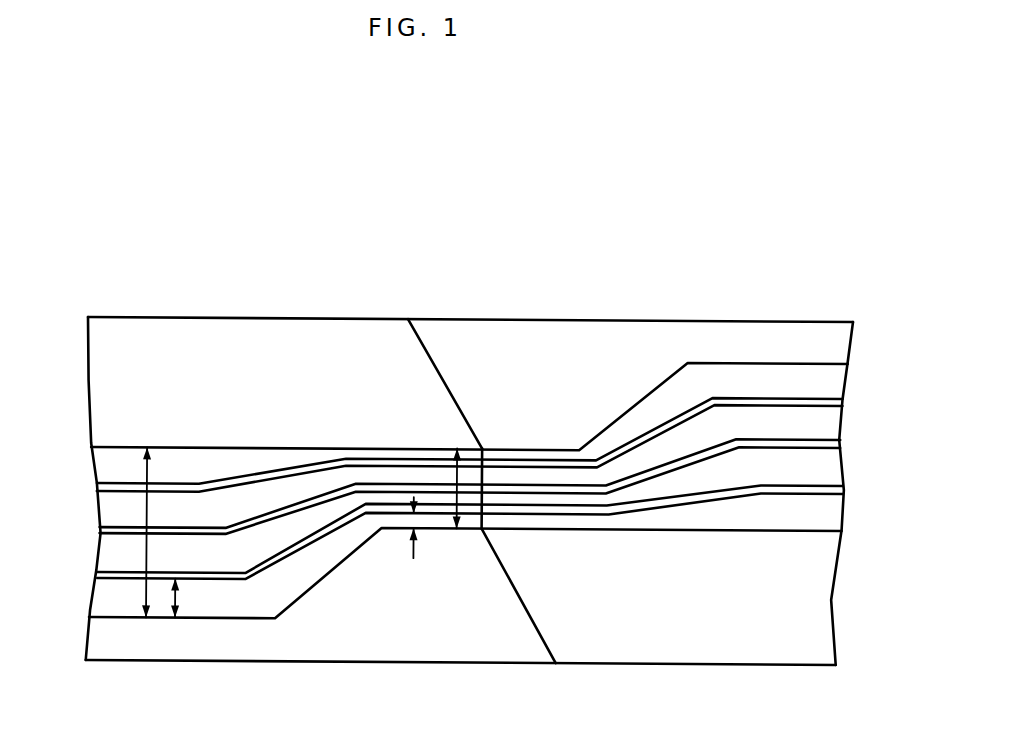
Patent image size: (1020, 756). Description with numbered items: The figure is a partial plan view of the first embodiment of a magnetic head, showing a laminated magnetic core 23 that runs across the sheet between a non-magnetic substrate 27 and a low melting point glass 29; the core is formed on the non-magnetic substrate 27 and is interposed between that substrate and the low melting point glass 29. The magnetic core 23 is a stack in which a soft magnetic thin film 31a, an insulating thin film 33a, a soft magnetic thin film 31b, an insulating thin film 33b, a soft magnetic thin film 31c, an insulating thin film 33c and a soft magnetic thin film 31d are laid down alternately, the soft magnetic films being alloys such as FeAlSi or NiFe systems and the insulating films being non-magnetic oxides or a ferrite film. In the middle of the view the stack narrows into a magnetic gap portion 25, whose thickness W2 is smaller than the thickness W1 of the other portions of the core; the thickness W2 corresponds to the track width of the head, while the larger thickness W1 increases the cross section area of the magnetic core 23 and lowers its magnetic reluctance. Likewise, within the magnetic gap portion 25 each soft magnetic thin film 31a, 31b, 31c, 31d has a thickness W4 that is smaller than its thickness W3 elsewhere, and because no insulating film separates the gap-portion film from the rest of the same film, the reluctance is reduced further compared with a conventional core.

The magnetic core 23 is at (317, 443).
The magnetic gap portion 25 is at (490, 468).
The non-magnetic substrate 27 is at (253, 343).
The low melting point glass 29 is at (668, 338).
The soft magnetic thin film 31a is at (128, 460).
The soft magnetic thin film 31b is at (113, 500).
The soft magnetic thin film 31c is at (120, 547).
The soft magnetic thin film 31d is at (120, 608).
The insulating thin film 33a is at (97, 484).
The insulating thin film 33b is at (102, 528).
The insulating thin film 33c is at (100, 573).
The thickness W1 is at (150, 457).
The thickness W2 is at (453, 473).
The thickness W3 is at (182, 588).
The thickness W4 is at (418, 548).